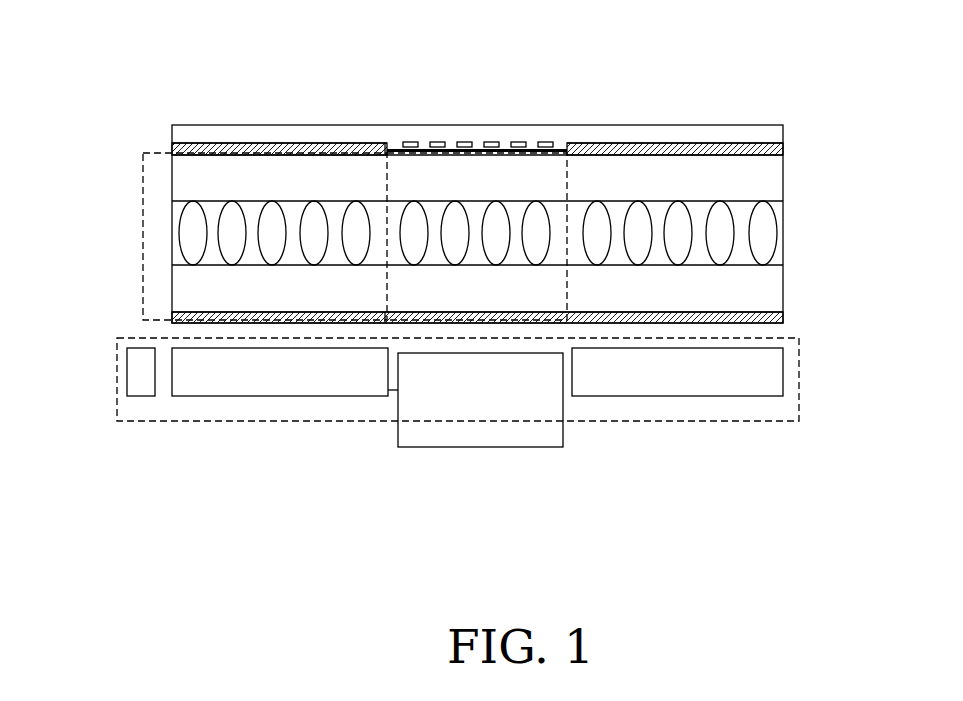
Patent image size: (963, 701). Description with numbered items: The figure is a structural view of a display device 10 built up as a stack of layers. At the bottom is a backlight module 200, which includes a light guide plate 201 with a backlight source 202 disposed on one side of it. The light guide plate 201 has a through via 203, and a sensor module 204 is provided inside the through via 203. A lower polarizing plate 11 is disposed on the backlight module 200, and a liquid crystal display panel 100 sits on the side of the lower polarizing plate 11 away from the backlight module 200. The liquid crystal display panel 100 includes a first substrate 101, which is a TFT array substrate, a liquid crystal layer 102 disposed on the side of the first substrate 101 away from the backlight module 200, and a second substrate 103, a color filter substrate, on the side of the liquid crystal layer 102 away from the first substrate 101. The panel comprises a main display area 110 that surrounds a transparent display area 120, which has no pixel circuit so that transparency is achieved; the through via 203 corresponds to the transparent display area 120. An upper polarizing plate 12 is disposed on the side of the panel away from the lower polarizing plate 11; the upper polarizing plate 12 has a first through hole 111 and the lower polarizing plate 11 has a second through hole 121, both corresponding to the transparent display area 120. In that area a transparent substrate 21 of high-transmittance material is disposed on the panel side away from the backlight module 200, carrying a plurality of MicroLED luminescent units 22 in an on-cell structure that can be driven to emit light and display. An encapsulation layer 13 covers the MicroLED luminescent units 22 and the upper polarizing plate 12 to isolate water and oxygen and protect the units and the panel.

The display device 10 is at (450, 112).
The lower polarizing plate 11 is at (783, 324).
The upper polarizing plate 12 is at (777, 153).
The encapsulation layer 13 is at (771, 132).
The transparent substrate 21 is at (388, 140).
The MicroLED luminescent units 22 is at (523, 145).
The liquid crystal display panel 100 is at (865, 217).
The first substrate 101 is at (757, 300).
The liquid crystal layer 102 is at (780, 252).
The second substrate 103 is at (772, 178).
The main display area 110 is at (140, 170).
The first through hole 111 is at (387, 320).
The transparent display area 120 is at (530, 172).
The second through hole 121 is at (387, 150).
The backlight module 200 is at (758, 419).
The light guide plate 201 is at (772, 375).
The backlight source 202 is at (145, 387).
The through via 203 is at (385, 397).
The sensor module 204 is at (538, 443).